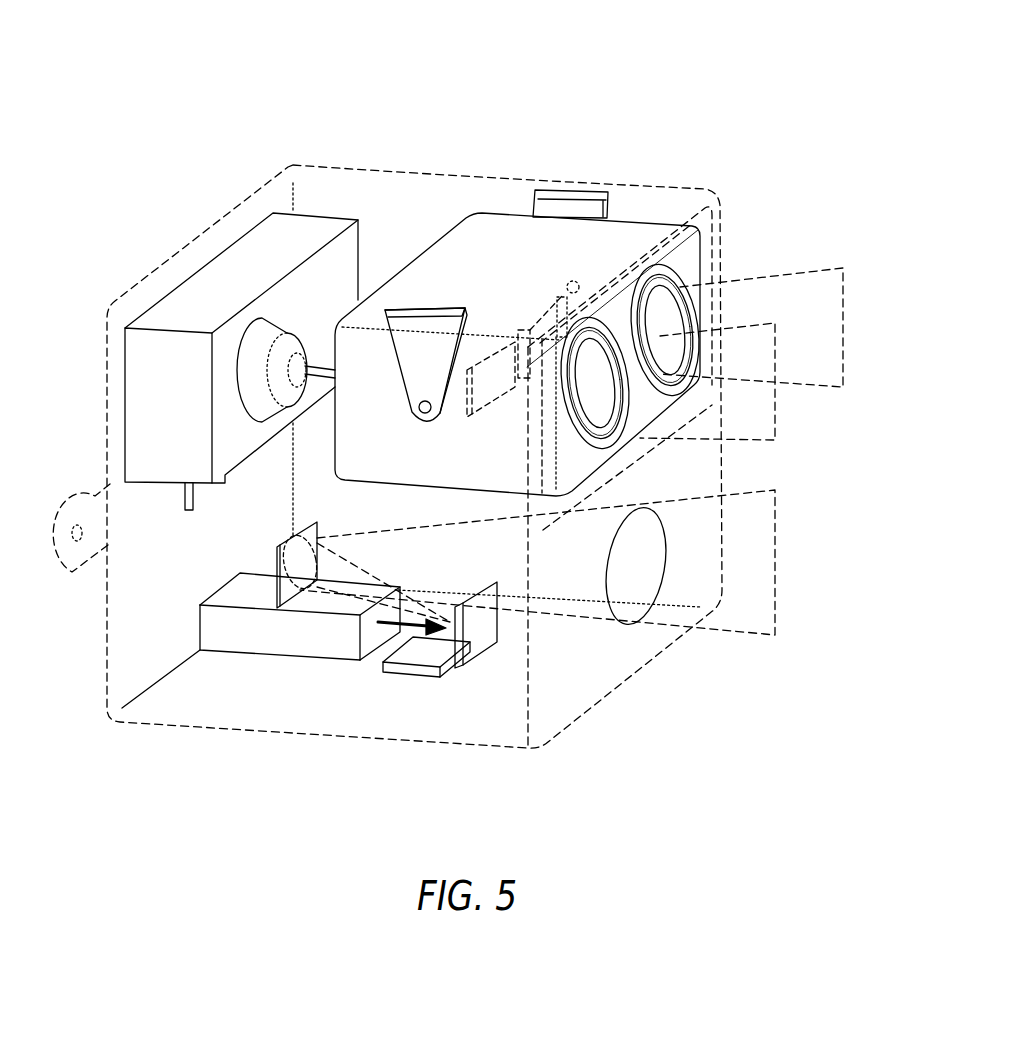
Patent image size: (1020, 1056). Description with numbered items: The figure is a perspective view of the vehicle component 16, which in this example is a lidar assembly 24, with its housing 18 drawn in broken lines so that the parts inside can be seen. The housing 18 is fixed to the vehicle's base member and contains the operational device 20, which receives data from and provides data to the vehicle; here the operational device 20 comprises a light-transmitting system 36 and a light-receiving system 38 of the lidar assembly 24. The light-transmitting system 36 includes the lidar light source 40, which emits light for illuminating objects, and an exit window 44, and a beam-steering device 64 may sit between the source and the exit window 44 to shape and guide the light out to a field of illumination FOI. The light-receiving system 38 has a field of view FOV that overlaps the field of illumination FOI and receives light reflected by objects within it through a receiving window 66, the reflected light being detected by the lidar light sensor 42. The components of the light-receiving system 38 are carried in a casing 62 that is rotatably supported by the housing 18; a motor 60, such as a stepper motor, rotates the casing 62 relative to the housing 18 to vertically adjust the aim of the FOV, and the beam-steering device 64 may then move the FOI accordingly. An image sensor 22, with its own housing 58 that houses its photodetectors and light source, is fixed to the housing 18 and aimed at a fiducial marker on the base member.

The vehicle component 16 is at (387, 386).
The lidar assembly 24 is at (387, 386).
The housing 18 is at (523, 177).
The casing 62 is at (402, 270).
The light-receiving system 38 is at (430, 232).
The lidar light sensor 42 is at (483, 350).
The receiving window 66 is at (600, 372).
The motor 60 is at (248, 332).
The image sensor housing 58 is at (187, 500).
The image sensor 22 is at (225, 483).
The operational device 20 is at (322, 473).
The light-transmitting system 36 is at (272, 670).
The lidar light source 40 is at (337, 645).
The beam-steering device 64 is at (270, 592).
The exit window 44 is at (647, 613).
The field of view FOV is at (803, 385).
The field of illumination FOI is at (775, 578).